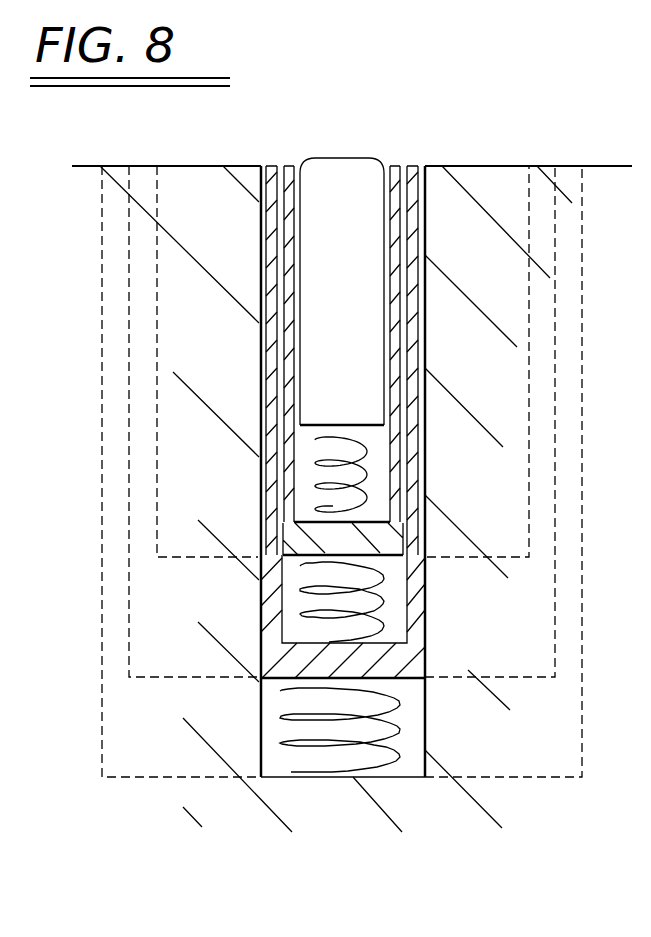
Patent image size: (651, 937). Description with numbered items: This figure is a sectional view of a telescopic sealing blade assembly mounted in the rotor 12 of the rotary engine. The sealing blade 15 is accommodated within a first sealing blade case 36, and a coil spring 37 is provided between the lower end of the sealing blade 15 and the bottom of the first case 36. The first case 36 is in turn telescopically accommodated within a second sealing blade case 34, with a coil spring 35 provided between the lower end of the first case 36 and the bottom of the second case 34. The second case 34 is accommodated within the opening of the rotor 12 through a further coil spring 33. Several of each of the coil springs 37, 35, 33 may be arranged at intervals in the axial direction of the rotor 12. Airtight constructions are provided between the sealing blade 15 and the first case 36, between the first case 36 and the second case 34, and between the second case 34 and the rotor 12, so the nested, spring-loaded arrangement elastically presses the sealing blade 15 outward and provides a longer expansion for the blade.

The rotor 12 is at (483, 188).
The sealing blade 15 is at (330, 311).
The coil spring 33 is at (393, 700).
The second sealing blade case 34 is at (407, 663).
The coil spring 35 is at (377, 585).
The first sealing blade case 36 is at (397, 461).
The coil spring 37 is at (360, 447).